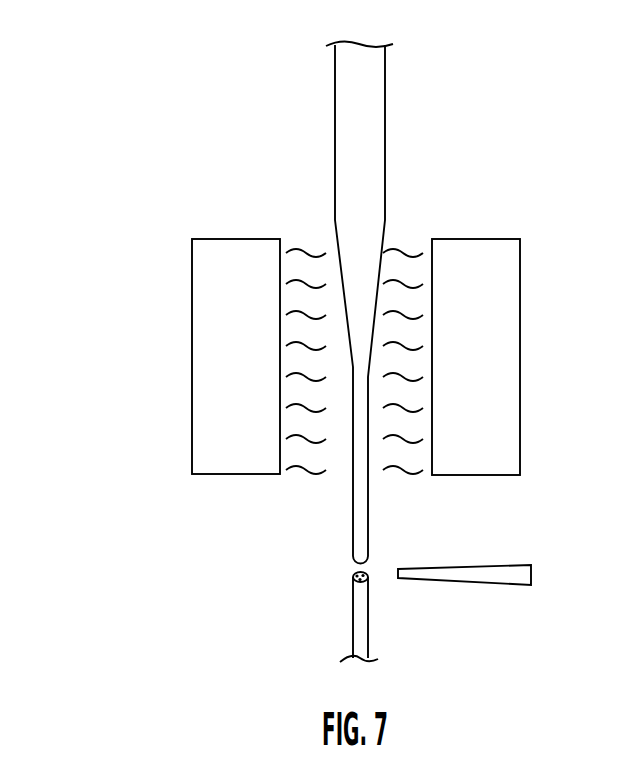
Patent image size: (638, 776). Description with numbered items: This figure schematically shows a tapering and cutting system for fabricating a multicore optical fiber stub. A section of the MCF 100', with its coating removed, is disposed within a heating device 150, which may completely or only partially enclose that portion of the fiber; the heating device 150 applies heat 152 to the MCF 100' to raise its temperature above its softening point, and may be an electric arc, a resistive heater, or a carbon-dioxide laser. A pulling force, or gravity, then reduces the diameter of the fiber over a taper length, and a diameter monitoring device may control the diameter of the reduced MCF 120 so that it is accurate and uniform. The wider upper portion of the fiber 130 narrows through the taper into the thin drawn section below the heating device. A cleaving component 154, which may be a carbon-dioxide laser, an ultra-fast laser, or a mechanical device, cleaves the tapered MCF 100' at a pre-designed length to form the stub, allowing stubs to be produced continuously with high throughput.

The multicore optical fiber 100' is at (285, 64).
The MCF 120 is at (362, 403).
The preform / glass tube 130 is at (385, 123).
The heating device 150 is at (107, 293).
The heat 152 is at (302, 220).
The cleaving component 154 is at (497, 585).